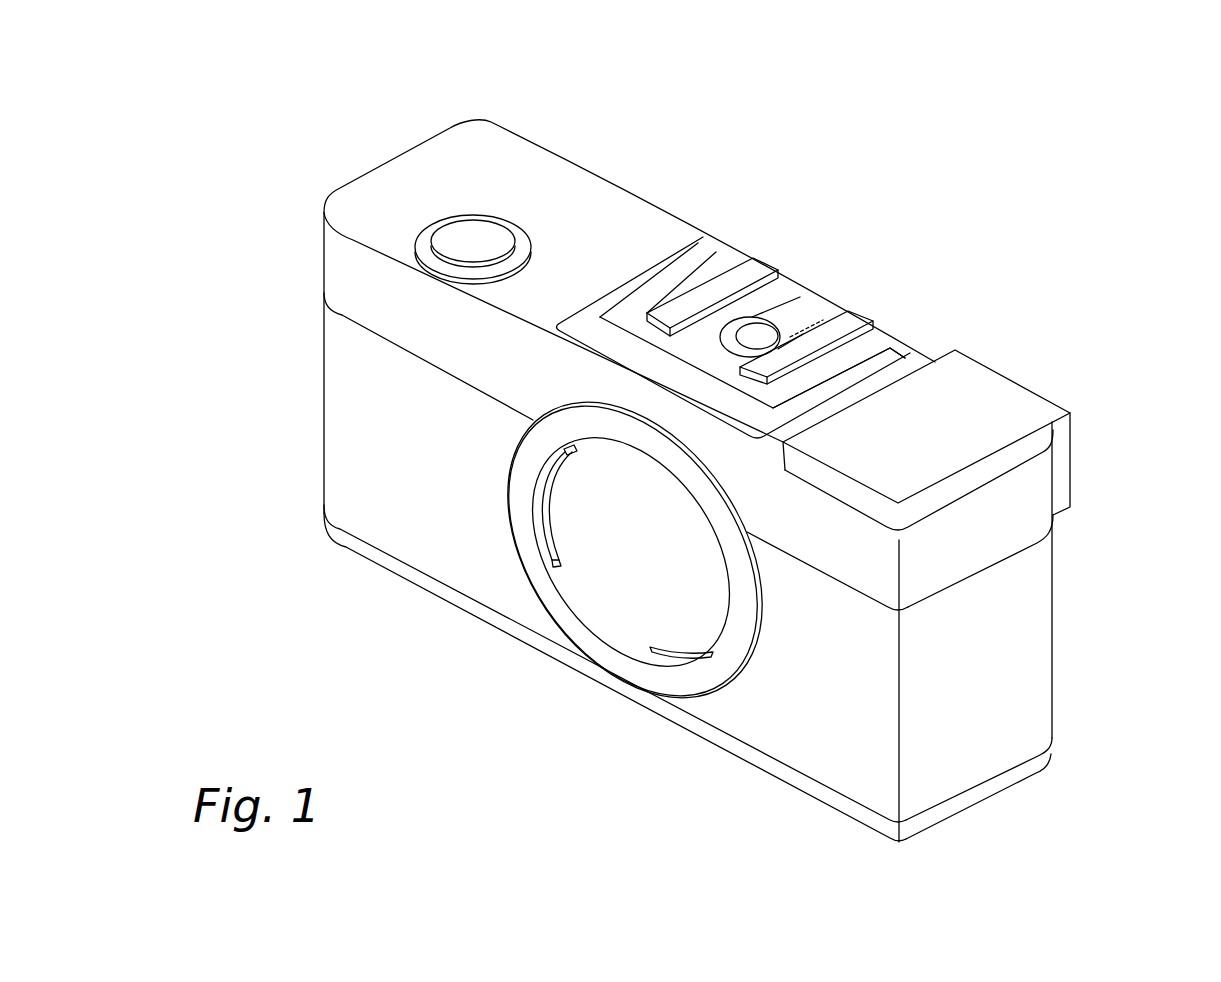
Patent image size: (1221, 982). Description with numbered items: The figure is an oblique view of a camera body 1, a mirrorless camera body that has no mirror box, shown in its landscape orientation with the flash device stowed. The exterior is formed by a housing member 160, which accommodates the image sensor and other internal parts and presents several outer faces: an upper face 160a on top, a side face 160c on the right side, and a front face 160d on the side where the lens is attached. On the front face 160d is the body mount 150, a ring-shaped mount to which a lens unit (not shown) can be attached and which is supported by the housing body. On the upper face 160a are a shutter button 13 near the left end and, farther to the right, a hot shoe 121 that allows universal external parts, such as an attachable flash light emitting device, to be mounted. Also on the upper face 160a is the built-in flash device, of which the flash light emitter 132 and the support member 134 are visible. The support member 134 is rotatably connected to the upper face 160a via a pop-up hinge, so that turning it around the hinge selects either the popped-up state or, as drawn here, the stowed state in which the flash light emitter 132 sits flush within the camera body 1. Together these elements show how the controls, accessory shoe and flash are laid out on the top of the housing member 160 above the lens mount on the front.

The camera body 1 is at (372, 148).
The shutter button 13 is at (425, 242).
The hot shoe 121 is at (848, 318).
The flash light emitter 132 is at (587, 337).
The support member 134 is at (867, 372).
The body mount 150 is at (560, 598).
The housing member 160 is at (993, 670).
The upper face 160a is at (486, 177).
The side face 160c is at (1028, 585).
The front face 160d is at (378, 403).